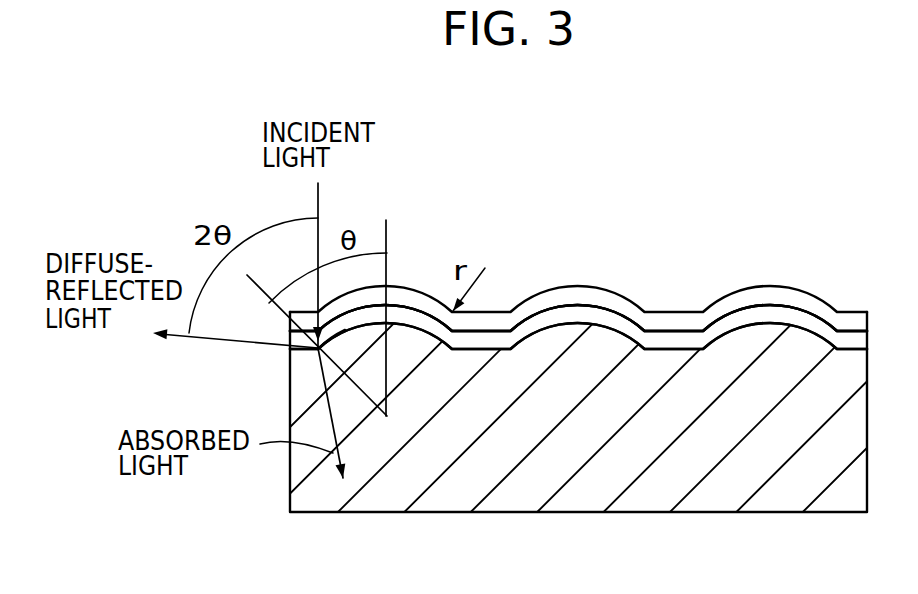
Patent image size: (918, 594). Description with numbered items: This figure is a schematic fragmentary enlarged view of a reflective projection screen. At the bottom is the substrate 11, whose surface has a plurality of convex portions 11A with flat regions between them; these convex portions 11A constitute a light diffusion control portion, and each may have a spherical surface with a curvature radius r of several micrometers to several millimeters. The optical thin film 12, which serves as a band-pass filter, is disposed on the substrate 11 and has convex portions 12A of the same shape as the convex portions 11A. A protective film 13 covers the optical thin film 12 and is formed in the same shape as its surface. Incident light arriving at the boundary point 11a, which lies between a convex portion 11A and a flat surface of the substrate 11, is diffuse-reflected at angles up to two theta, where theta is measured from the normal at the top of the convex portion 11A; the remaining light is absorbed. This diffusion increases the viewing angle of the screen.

The substrate 11 is at (797, 498).
The convex portion 11A is at (798, 328).
The boundary point 11a is at (312, 357).
The optical thin film 12 is at (593, 313).
The convex portion 12A is at (548, 310).
The protective film 13 is at (720, 308).